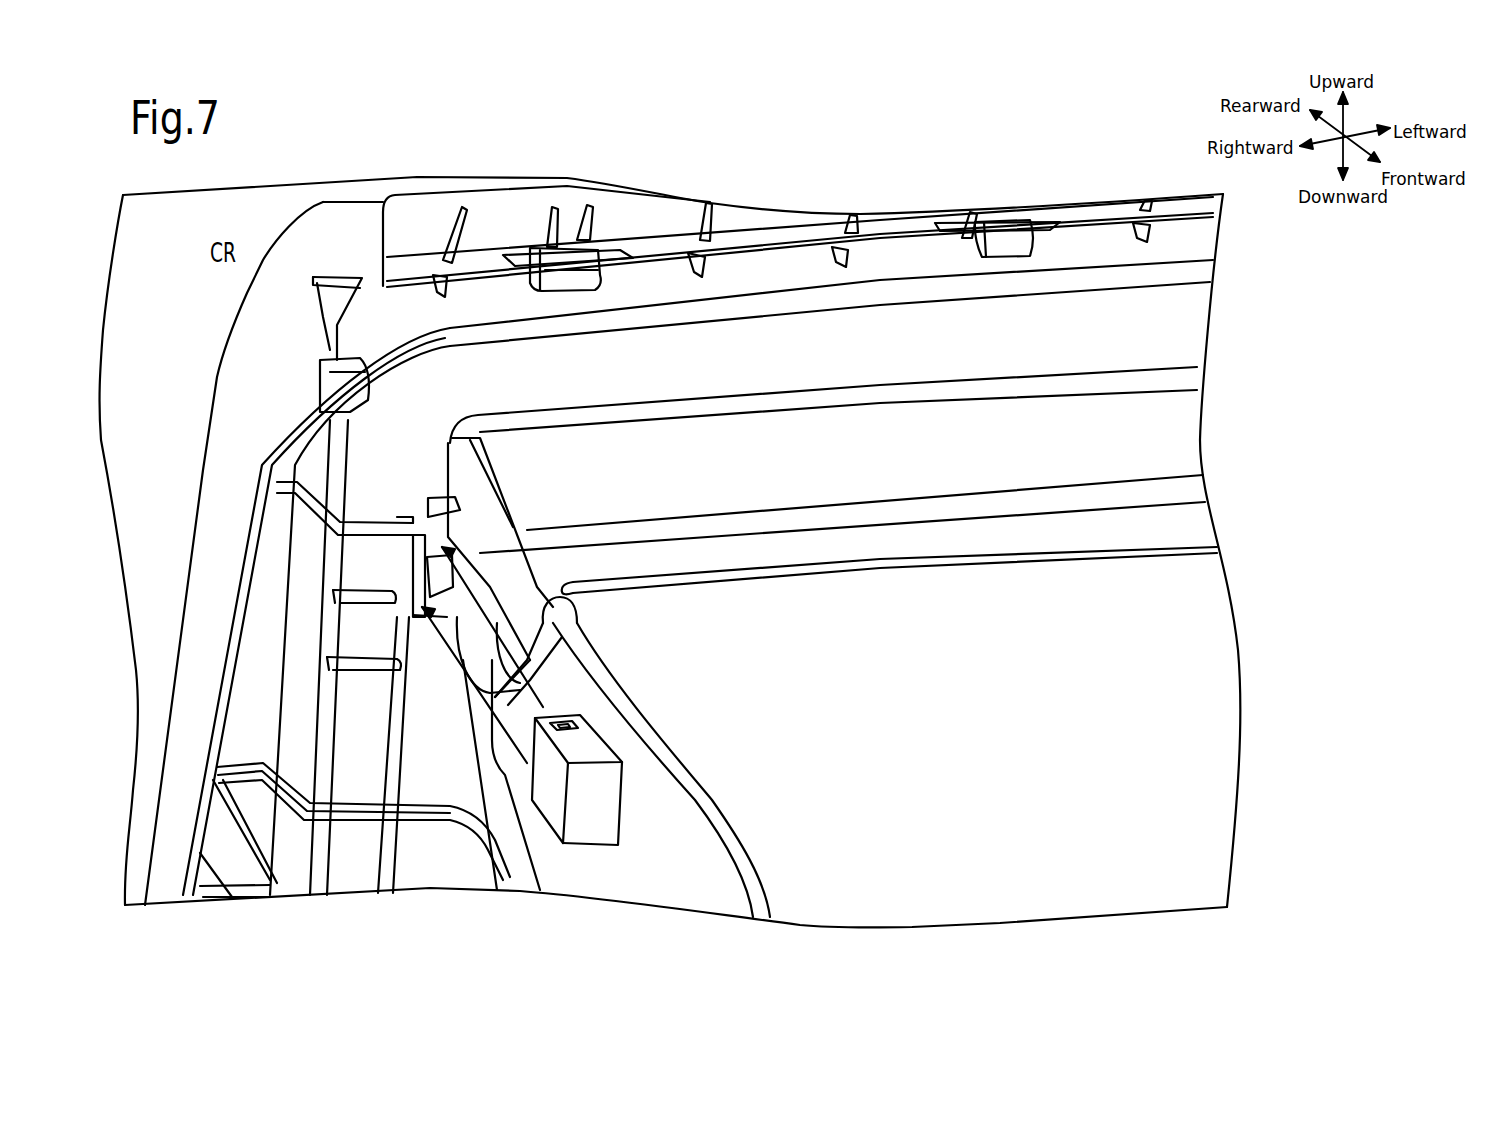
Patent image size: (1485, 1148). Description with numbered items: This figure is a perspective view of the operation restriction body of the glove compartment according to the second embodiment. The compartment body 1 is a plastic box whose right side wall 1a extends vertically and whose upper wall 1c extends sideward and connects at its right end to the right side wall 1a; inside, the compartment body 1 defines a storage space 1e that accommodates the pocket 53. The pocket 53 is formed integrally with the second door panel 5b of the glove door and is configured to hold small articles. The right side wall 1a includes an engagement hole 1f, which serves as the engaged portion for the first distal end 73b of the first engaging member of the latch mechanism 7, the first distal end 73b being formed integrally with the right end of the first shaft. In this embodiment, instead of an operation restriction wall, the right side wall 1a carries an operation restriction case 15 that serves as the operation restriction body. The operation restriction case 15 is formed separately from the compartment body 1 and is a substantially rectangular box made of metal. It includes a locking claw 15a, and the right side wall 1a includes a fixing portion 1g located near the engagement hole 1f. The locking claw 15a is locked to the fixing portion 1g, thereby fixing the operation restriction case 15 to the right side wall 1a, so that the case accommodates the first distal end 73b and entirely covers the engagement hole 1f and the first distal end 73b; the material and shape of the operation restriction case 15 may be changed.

The compartment body 1 is at (218, 375).
The right side wall 1a is at (362, 862).
The upper wall 1c is at (1167, 323).
The storage space 1e is at (1102, 568).
The engagement hole 1f is at (490, 593).
The fixing portion 1g is at (420, 545).
The latch mechanism 7 is at (413, 558).
The first distal end 73b is at (520, 530).
The operation restriction case 15 is at (602, 833).
The locking claw 15a is at (567, 722).
The second door panel 5b is at (697, 785).
The pocket 53 is at (682, 560).